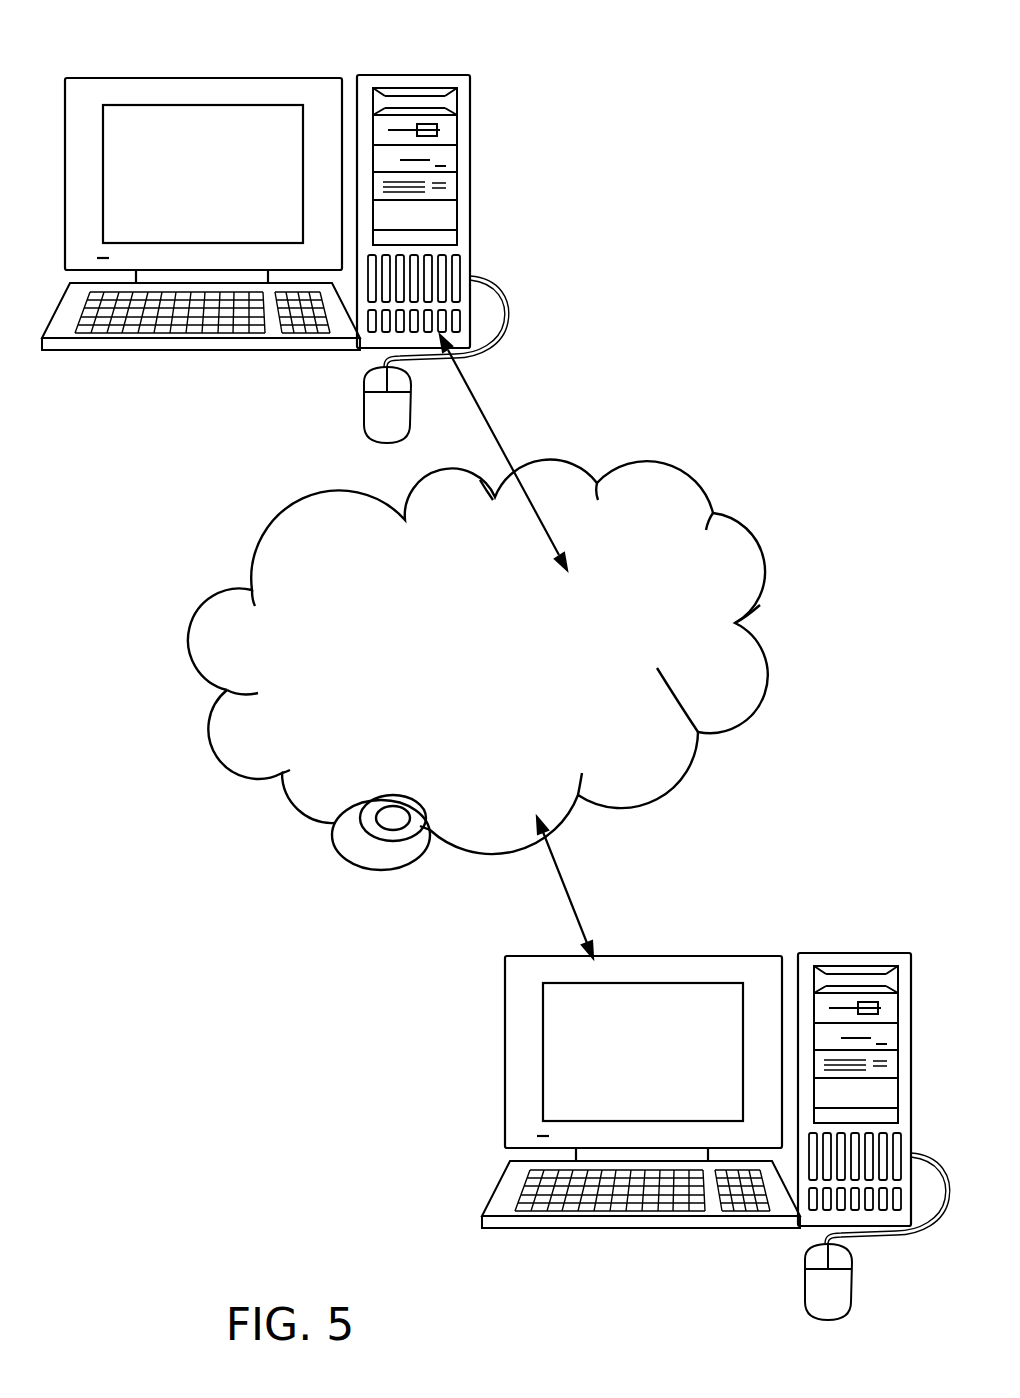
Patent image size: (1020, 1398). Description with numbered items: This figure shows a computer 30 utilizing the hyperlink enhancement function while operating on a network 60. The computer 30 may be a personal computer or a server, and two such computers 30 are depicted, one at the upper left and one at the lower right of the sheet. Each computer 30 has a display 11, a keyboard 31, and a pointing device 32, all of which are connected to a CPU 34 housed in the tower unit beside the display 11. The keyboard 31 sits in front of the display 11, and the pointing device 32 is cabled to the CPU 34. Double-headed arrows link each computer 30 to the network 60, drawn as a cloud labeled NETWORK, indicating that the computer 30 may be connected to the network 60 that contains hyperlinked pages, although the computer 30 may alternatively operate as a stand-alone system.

The display 11 is at (148, 78).
The computer 30 is at (266, 80).
The keyboard 31 is at (215, 352).
The pointing device 32 is at (364, 408).
The CPU 34 is at (470, 175).
The network 60 is at (688, 488).